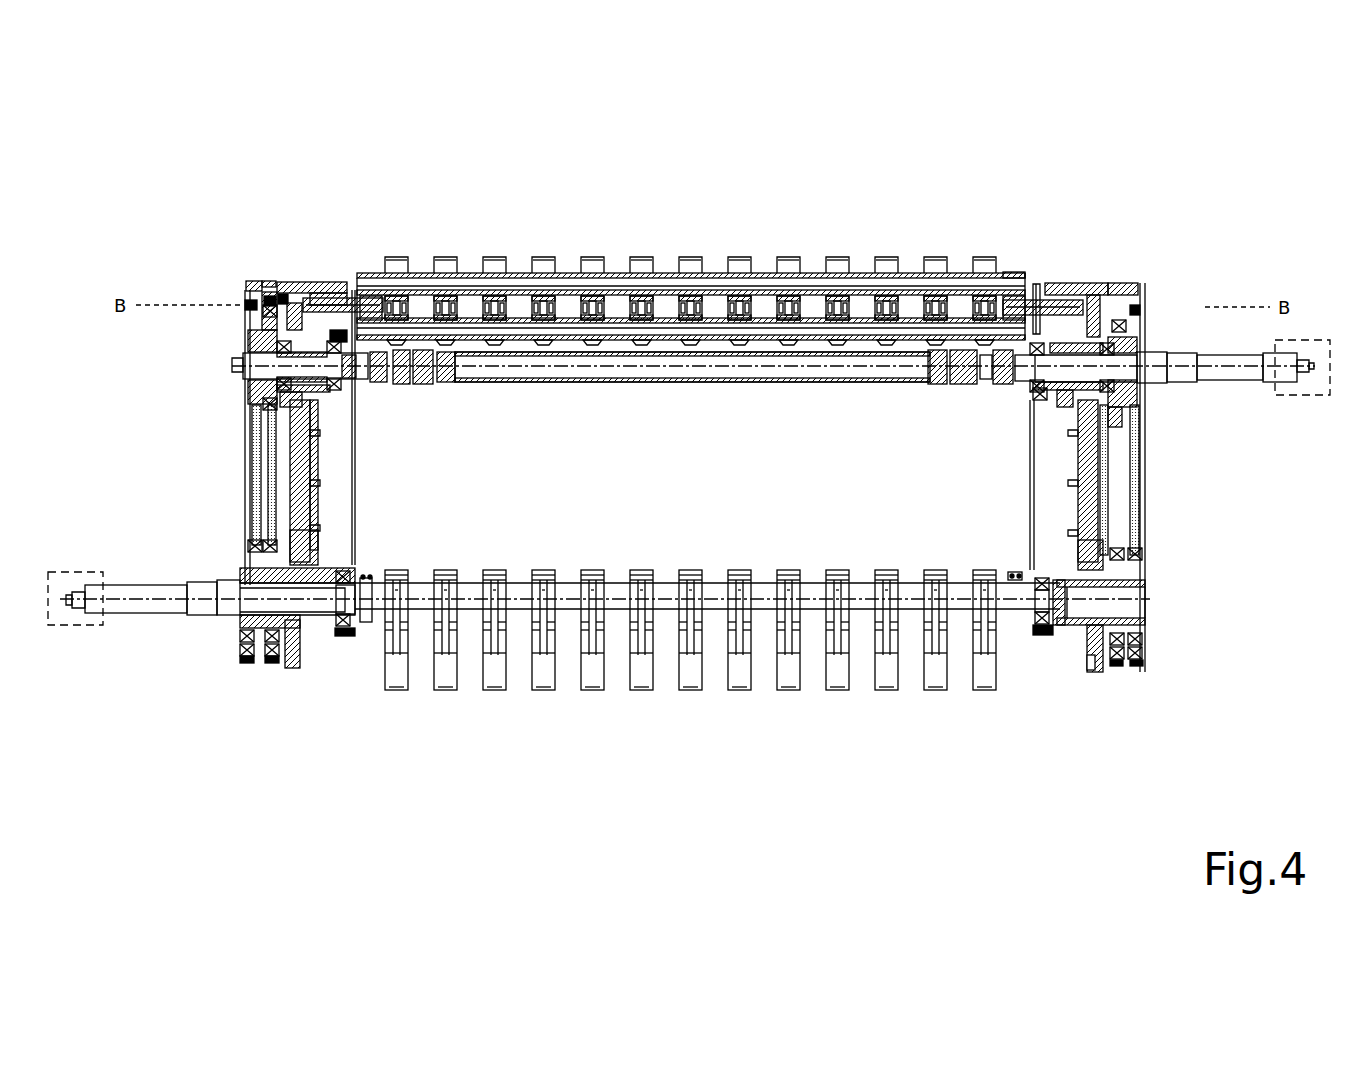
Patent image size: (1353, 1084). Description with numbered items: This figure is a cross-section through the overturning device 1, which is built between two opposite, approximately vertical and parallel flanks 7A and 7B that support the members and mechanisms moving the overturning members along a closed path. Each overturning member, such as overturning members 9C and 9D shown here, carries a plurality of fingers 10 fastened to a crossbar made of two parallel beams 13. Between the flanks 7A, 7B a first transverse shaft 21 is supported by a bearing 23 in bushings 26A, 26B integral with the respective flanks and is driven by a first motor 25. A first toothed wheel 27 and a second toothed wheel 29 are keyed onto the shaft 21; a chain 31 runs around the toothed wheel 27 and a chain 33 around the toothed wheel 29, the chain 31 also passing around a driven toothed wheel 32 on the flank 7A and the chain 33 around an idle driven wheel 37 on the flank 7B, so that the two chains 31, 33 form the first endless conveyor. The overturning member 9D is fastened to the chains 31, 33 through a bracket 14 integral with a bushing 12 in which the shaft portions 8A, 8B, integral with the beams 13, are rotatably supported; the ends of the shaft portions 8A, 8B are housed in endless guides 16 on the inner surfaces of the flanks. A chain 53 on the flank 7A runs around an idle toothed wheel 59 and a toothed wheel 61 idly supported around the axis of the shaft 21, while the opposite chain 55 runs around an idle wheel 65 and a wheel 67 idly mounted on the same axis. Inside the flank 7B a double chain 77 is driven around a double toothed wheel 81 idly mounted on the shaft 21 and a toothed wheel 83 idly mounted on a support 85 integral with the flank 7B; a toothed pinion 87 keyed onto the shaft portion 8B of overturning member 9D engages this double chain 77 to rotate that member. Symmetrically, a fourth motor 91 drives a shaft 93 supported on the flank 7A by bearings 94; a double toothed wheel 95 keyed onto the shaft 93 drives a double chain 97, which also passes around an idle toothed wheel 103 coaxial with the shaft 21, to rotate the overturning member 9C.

The device 1 is at (372, 785).
The flank 7A is at (300, 466).
The flank 7B is at (1095, 466).
The shaft portion 8A is at (348, 292).
The shaft portion 8B is at (1050, 290).
The overturning member 9C is at (988, 705).
The overturning member 9D is at (985, 245).
The fingers 10 is at (446, 268).
The bushing 12 is at (322, 283).
The beams 13 is at (571, 332).
The bracket 14 is at (259, 285).
The endless guide 16 is at (298, 652).
The first transverse shaft 21 is at (835, 382).
The bearing 23 is at (278, 390).
The first motor 25 is at (1300, 395).
The bushing 26A is at (284, 296).
The bushing 26B is at (1125, 325).
The first toothed wheel 27 is at (248, 342).
The second toothed wheel 29 is at (1140, 345).
The chain 31 is at (246, 303).
The driven toothed wheel 32 is at (242, 645).
The chain 33 is at (1140, 300).
The idle driven wheel 37 is at (1143, 650).
The chain 53 is at (290, 493).
The chain 55 is at (1098, 495).
The idle toothed wheel 59 is at (308, 545).
The toothed wheel 61 is at (295, 408).
The idle wheel 65 is at (1080, 550).
The wheel 67 is at (1120, 414).
The double chain 77 is at (1040, 634).
The double toothed wheel 81 is at (1033, 392).
The toothed wheel 83 is at (1033, 572).
The support 85 is at (1085, 592).
The toothed pinion 87 is at (1036, 282).
The fourth motor 91 is at (70, 625).
The shaft 93 is at (145, 612).
The bearings 94 is at (240, 575).
The double toothed wheel 95 is at (340, 568).
The double chain 97 is at (380, 362).
The idle toothed wheel 103 is at (345, 383).